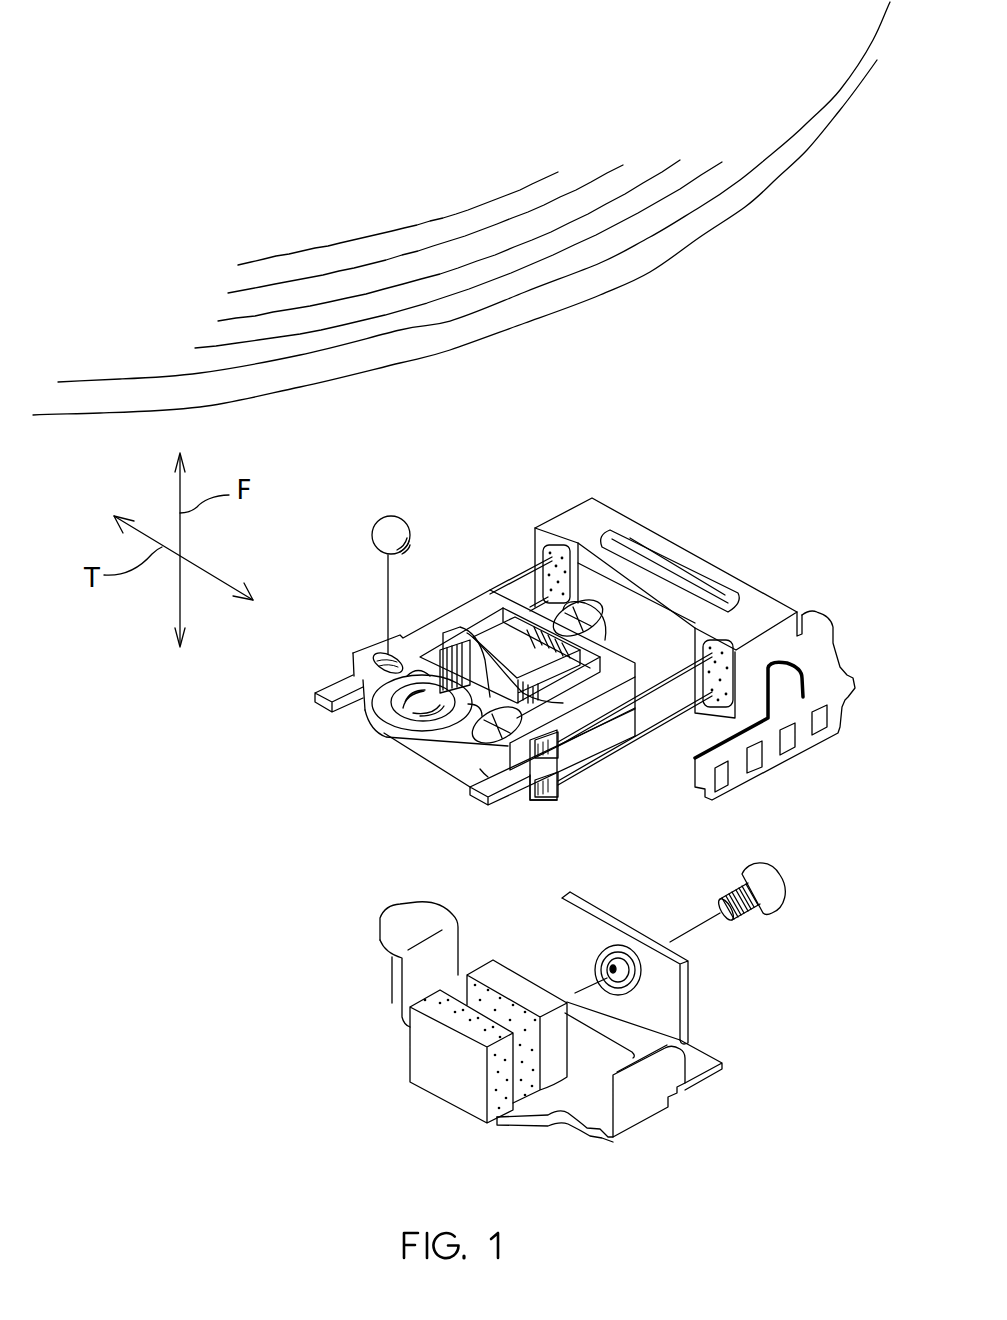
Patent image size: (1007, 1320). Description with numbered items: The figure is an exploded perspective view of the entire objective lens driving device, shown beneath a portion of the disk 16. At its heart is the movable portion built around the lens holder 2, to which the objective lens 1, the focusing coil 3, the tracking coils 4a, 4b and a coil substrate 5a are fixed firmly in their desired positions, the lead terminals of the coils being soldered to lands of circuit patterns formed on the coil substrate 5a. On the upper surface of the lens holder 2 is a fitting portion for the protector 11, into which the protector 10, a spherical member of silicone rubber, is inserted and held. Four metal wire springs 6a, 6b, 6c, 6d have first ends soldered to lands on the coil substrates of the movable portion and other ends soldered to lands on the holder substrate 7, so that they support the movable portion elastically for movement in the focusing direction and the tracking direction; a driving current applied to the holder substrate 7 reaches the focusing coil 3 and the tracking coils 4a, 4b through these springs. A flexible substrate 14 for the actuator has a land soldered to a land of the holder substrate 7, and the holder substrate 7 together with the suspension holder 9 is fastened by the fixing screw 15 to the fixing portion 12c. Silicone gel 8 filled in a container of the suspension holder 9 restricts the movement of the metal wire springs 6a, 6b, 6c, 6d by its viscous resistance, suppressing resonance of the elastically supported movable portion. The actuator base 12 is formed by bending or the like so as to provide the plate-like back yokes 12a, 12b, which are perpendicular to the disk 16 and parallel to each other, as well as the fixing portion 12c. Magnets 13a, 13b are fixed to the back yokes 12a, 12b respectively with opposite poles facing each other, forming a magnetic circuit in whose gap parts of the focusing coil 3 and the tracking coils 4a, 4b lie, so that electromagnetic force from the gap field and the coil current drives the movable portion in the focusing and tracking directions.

The objective lens 1 is at (388, 703).
The lens holder 2 is at (437, 752).
The focusing coil 3 is at (513, 637).
The tracking coil 4a is at (463, 653).
The tracking coil 4b is at (575, 778).
The coil substrate 5a is at (537, 790).
The metal wire spring 6a is at (665, 678).
The metal wire spring 6b is at (648, 733).
The metal wire spring 6c is at (527, 573).
The metal wire spring 6d is at (493, 622).
The holder substrate 7 is at (640, 516).
The silicone gel 8 is at (713, 697).
The suspension holder 9 is at (752, 612).
The protector 10 is at (378, 522).
The fitting portion for the protector 11 is at (369, 662).
The actuator base 12 is at (644, 1107).
The back yoke 12a is at (420, 1043).
The back yoke 12b is at (517, 973).
The fixing portion 12c is at (692, 992).
The magnet 13a is at (430, 993).
The magnet 13b is at (477, 967).
The flexible substrate 14 is at (770, 758).
The fixing screw 15 is at (782, 887).
The disk 16 is at (433, 350).